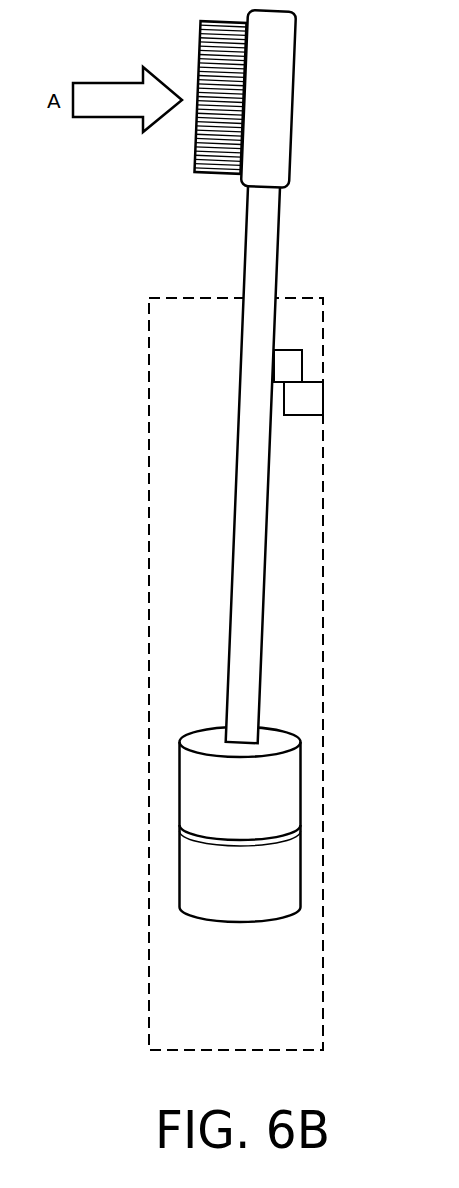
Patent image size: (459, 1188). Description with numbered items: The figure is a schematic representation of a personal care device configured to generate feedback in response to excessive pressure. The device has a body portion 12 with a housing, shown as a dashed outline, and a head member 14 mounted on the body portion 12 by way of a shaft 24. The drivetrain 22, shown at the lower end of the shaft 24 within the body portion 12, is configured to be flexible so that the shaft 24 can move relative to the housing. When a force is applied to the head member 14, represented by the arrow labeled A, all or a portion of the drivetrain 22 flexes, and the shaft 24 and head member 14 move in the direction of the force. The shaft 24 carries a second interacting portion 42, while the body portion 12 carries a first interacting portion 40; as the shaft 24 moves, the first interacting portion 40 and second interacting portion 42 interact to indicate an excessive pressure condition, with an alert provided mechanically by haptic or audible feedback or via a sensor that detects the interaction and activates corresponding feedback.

The body portion 12 is at (323, 665).
The head member 14 is at (297, 137).
The drivetrain 22 is at (300, 817).
The shaft 24 is at (233, 523).
The first interacting portion 40 is at (323, 397).
The second interacting portion 42 is at (302, 356).